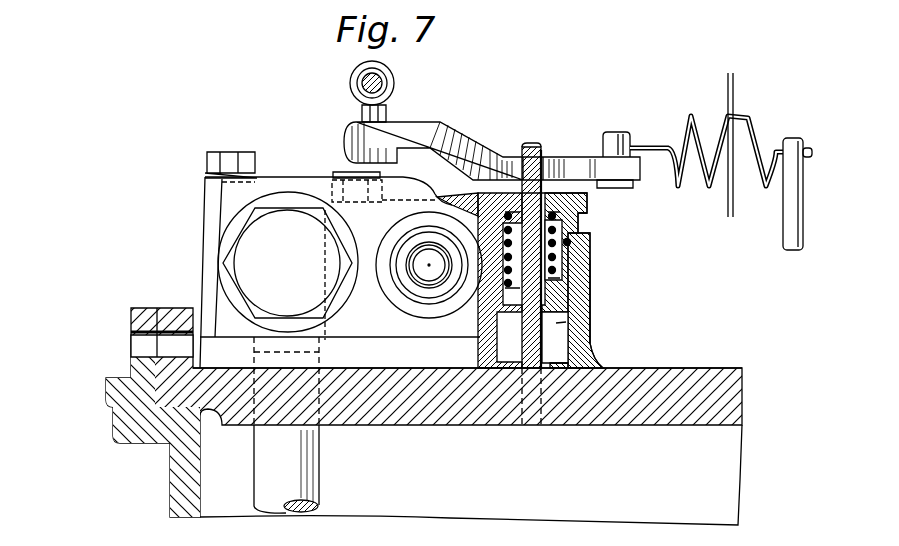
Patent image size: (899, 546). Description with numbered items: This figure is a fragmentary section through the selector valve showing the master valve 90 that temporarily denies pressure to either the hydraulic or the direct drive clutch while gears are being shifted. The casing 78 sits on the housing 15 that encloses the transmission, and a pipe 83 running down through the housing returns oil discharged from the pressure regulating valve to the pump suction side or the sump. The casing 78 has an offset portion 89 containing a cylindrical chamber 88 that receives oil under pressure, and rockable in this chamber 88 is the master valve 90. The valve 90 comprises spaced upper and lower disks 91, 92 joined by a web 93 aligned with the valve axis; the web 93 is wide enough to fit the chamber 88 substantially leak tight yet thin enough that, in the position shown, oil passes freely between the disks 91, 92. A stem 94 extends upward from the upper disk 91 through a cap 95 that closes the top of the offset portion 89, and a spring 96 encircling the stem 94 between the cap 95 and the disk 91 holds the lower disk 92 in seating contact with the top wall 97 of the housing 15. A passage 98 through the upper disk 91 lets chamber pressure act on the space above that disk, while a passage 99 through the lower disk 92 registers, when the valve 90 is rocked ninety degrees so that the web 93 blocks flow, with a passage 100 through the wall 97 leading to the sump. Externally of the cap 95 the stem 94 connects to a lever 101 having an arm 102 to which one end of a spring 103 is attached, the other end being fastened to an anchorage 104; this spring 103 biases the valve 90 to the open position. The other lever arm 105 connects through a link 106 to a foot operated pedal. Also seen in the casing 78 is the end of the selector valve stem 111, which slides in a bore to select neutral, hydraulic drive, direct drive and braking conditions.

The housing 15 is at (104, 411).
The casing 78 is at (205, 213).
The pipe 83 is at (319, 470).
The cylindrical chamber 88 is at (541, 344).
The offset portion 89 is at (586, 278).
The master valve 90 is at (592, 314).
The upper disk 91 is at (558, 298).
The lower disk 92 is at (578, 356).
The web 93 is at (584, 349).
The stem 94 is at (580, 249).
The cap 95 is at (578, 213).
The spring 96 is at (555, 229).
The top wall 97 is at (720, 370).
The passage 98 is at (495, 298).
The passage 99 is at (560, 370).
The passage 100 is at (515, 412).
The lever 101 is at (550, 157).
The arm 102 is at (578, 157).
The spring 103 is at (727, 113).
The anchorage 104 is at (783, 228).
The lever arm 105 is at (468, 128).
The link 106 is at (384, 84).
The valve stem 111 is at (417, 283).